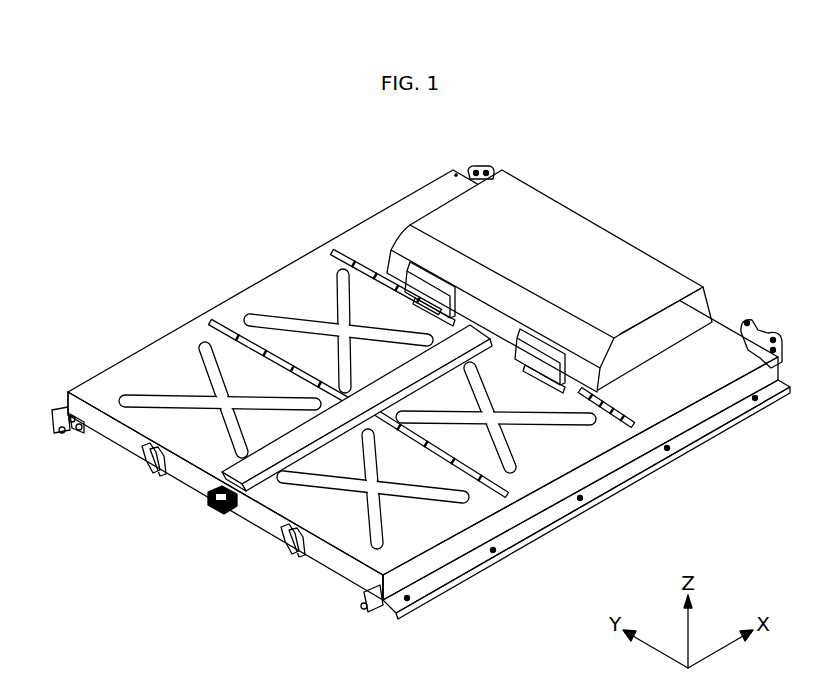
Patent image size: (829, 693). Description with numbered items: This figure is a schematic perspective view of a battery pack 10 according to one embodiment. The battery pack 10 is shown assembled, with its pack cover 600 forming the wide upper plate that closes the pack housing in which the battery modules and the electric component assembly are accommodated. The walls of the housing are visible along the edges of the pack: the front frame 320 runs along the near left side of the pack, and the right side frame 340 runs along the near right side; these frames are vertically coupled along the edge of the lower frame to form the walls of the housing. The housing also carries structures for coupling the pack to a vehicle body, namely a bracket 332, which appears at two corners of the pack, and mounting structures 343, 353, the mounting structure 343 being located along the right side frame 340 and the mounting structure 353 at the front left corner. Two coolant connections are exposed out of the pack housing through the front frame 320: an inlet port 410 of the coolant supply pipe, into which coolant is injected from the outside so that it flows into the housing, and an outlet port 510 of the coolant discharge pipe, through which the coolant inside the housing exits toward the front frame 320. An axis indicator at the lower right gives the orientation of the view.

The battery pack 10 is at (159, 149).
The pack cover 600 is at (278, 286).
The front frame 320 is at (188, 485).
The right side frame 340 is at (578, 503).
The mounting structure 343 is at (521, 536).
The bracket 332 is at (482, 168).
The mounting structure 353 is at (60, 408).
The outlet port 510 is at (63, 433).
The inlet port 410 is at (377, 602).